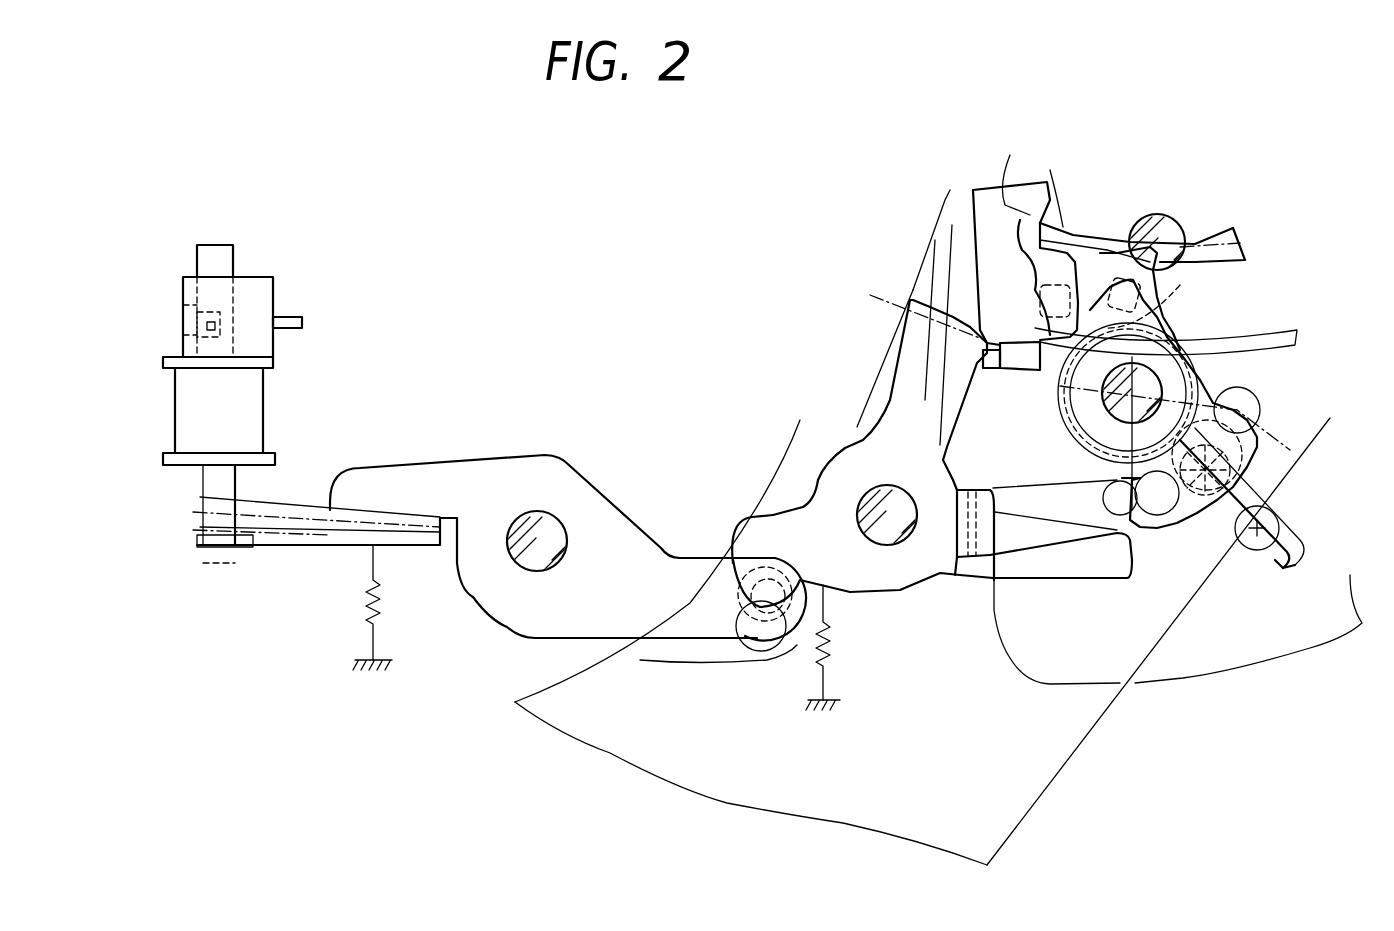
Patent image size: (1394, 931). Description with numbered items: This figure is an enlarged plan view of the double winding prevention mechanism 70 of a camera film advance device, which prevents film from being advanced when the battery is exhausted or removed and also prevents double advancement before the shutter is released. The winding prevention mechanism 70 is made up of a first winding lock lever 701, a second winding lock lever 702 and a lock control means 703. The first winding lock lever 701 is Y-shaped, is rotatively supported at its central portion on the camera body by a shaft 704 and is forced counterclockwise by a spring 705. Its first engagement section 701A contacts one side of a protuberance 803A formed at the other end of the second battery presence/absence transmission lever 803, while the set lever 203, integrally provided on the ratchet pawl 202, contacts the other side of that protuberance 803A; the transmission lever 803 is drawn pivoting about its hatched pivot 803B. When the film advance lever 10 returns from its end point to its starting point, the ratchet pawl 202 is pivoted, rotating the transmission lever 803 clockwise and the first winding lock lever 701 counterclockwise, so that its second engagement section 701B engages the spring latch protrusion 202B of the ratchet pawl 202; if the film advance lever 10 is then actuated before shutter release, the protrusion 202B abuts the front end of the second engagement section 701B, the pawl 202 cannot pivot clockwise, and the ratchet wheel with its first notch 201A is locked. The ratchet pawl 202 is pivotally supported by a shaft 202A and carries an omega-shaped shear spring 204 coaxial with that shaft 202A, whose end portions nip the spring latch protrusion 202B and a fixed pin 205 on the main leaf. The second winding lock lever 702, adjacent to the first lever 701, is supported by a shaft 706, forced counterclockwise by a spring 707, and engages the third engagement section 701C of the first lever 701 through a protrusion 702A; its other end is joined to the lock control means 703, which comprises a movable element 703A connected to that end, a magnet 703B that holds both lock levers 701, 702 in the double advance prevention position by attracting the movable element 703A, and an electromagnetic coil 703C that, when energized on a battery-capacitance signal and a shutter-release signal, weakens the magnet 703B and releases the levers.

The film advance lever 10 is at (1065, 757).
The winding prevention mechanism 70 is at (570, 452).
The lock control means 703 is at (271, 390).
The movable element 703A is at (208, 477).
The magnet 703B is at (190, 410).
The electromagnetic coil 703C is at (248, 287).
The second winding lock lever 702 is at (568, 581).
The protrusion 702A is at (757, 625).
The shaft 706 is at (525, 565).
The spring 707 is at (372, 590).
The first winding lock lever 701 is at (906, 437).
The first engagement section 701A is at (968, 265).
The second engagement section 701B is at (1103, 568).
The third engagement section 701C is at (742, 525).
The shaft 704 is at (880, 545).
The spring 705 is at (832, 640).
The second battery presence/absence transmission lever 803 is at (1049, 298).
The protuberance 803A is at (1005, 375).
The pivot shaft of ratchet lever 803B is at (1120, 227).
The first notch 201A is at (1092, 238).
The set lever 203 is at (1190, 270).
The ratchet pawl 202 is at (1205, 432).
The shaft 202A is at (1217, 347).
The spring latch protrusion 202B is at (1215, 482).
The shear spring 204 is at (1300, 545).
The fixed pin 205 is at (1270, 513).